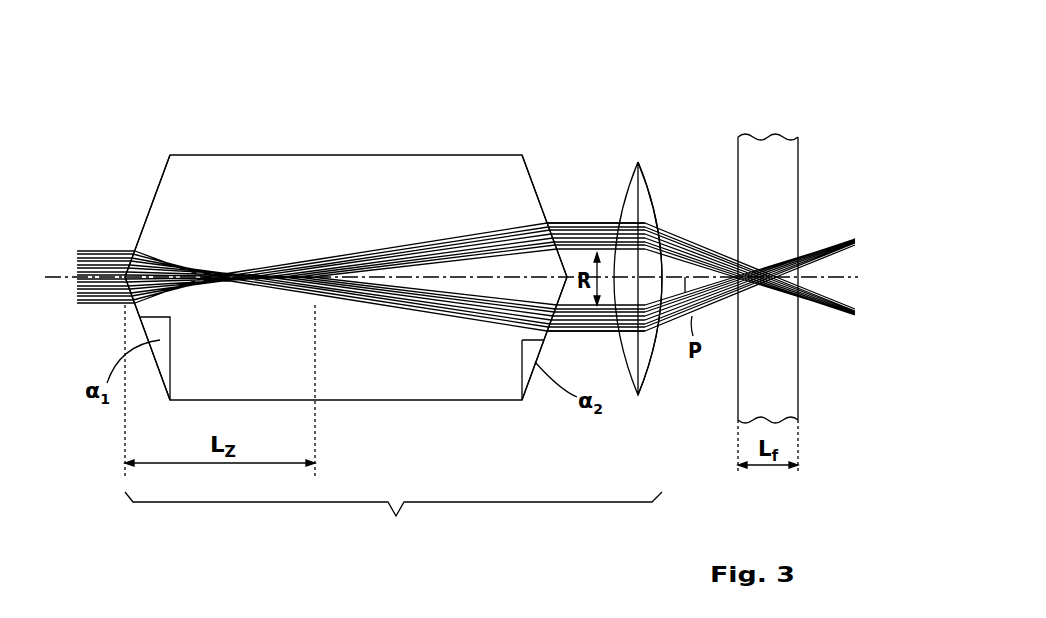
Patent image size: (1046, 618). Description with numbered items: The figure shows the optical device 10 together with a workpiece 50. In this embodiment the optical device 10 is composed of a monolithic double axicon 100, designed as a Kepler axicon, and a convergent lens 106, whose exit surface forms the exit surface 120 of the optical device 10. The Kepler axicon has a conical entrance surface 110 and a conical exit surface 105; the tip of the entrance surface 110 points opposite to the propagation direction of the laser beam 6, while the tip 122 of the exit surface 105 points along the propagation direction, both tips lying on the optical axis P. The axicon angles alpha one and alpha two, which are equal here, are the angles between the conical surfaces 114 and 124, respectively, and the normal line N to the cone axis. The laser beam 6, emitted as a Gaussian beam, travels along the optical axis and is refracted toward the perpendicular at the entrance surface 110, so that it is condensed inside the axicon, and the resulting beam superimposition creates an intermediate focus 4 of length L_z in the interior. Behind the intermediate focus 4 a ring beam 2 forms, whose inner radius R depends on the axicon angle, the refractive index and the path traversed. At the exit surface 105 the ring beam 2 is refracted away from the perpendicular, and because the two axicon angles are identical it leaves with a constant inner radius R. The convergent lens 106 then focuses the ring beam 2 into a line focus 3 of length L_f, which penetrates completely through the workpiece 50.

The ring beam 2 is at (458, 235).
The line focus 3 is at (782, 260).
The intermediate focus 4 is at (270, 275).
The laser beam 6 is at (103, 262).
The optical device 10 is at (396, 518).
The workpiece 50 is at (760, 178).
The monolithic double axicon 100 is at (507, 121).
The exit surface 105 is at (540, 199).
The convergent lens 106 is at (653, 217).
The entrance surface 110 is at (150, 205).
The conical surface 114 is at (135, 316).
The exit surface of the optical device 120 is at (658, 358).
The tip of the exit surface 122 is at (574, 233).
The conical surface 124 is at (547, 333).